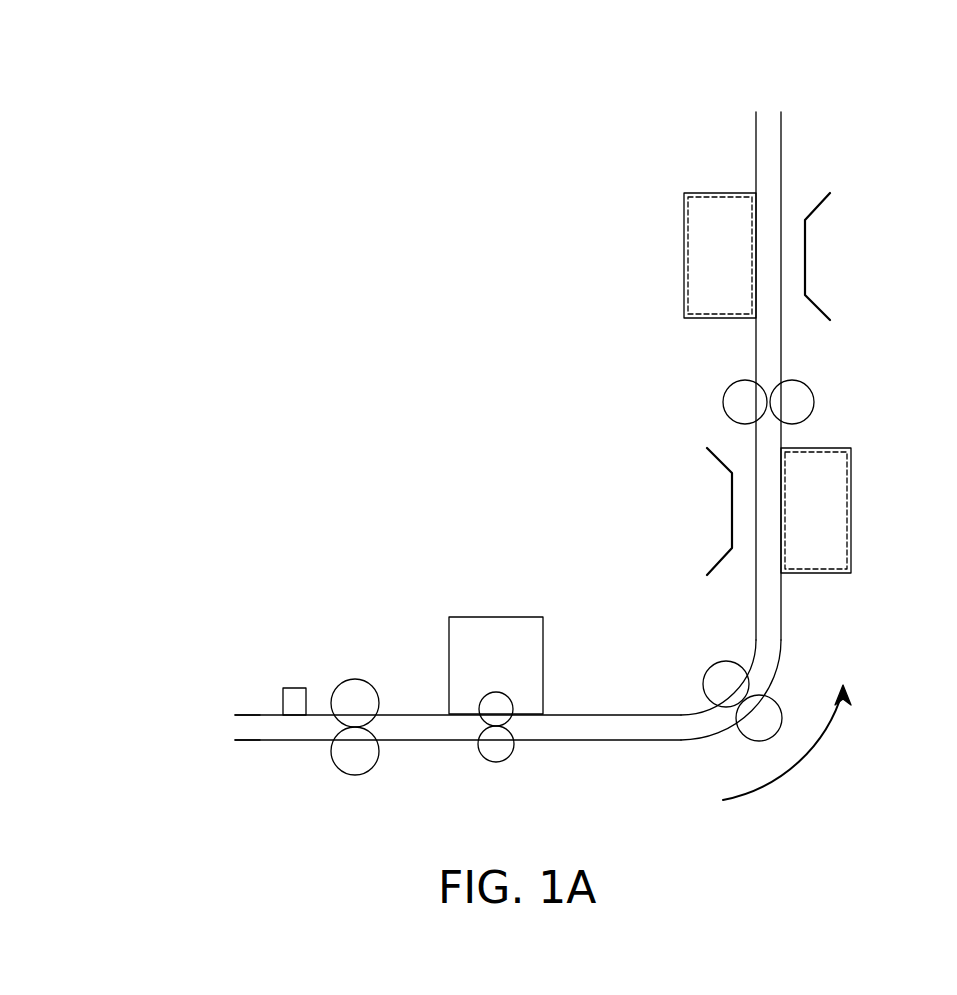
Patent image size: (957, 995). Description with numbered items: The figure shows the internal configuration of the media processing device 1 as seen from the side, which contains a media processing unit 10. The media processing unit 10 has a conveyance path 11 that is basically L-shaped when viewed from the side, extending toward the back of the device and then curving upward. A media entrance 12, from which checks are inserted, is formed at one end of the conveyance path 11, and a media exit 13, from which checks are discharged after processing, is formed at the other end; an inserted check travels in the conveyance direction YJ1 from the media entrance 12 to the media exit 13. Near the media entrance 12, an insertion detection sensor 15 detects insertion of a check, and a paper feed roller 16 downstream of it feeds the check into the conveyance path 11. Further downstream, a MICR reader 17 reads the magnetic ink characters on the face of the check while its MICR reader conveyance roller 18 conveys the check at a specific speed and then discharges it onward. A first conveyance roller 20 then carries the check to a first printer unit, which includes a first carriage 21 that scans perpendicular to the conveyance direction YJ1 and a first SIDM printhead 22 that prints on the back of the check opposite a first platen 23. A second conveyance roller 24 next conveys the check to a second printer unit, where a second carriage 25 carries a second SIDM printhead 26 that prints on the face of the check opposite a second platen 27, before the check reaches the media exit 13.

The media processing device 1 is at (438, 328).
The media processing unit 10 is at (603, 528).
The conveyance path 11 is at (600, 739).
The media entrance 12 is at (236, 727).
The media exit 13 is at (766, 125).
The insertion detection sensor 15 is at (294, 688).
The paper feed roller 16 is at (355, 678).
The MICR reader 17 is at (495, 617).
The MICR reader conveyance roller 18 is at (496, 763).
The first conveyance roller 20 is at (715, 661).
The first carriage 21 is at (816, 448).
The first SIDM printhead 22 is at (815, 575).
The first platen 23 is at (732, 508).
The second conveyance roller 24 is at (722, 402).
The second carriage 25 is at (707, 193).
The second SIDM printhead 26 is at (684, 247).
The second platen 27 is at (806, 250).
The conveyance direction YJ1 is at (815, 765).